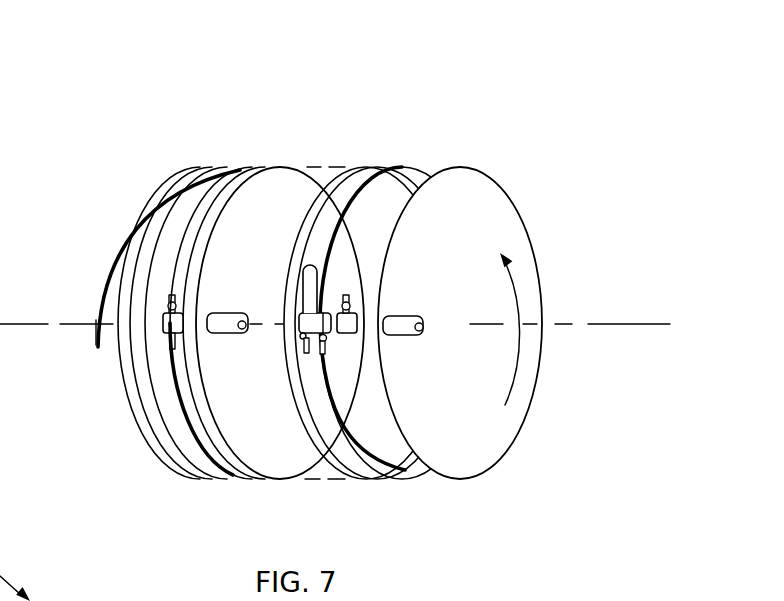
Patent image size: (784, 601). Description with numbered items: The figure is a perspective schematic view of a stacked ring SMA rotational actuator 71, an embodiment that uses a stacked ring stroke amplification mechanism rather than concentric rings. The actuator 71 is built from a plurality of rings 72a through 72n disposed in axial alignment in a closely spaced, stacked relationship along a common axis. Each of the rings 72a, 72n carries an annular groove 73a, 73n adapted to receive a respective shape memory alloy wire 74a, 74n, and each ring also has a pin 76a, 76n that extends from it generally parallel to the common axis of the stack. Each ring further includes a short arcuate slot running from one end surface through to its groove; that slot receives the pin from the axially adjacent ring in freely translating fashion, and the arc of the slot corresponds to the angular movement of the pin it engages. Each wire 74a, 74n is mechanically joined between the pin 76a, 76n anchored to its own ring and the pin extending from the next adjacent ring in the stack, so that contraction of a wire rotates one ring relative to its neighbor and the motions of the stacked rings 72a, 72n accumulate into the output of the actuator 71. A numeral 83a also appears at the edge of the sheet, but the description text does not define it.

The stacked ring SMA rotational actuator 71 is at (588, 199).
The ring 72a is at (166, 146).
The annular groove 73a is at (212, 200).
The SMA wire 74a is at (117, 257).
The pin 76a is at (235, 312).
The ring 72n is at (397, 133).
The annular groove 73n is at (403, 173).
The SMA wire 74n is at (372, 445).
The pin 76n is at (314, 265).
The element of adjacent figure 83a is at (105, 600).